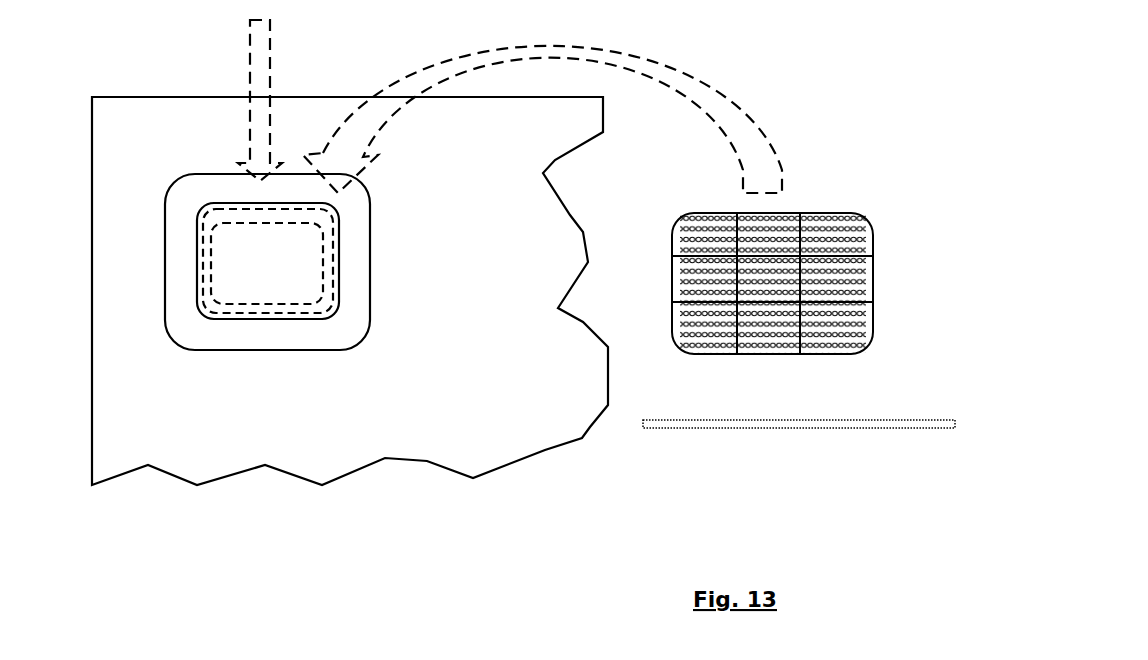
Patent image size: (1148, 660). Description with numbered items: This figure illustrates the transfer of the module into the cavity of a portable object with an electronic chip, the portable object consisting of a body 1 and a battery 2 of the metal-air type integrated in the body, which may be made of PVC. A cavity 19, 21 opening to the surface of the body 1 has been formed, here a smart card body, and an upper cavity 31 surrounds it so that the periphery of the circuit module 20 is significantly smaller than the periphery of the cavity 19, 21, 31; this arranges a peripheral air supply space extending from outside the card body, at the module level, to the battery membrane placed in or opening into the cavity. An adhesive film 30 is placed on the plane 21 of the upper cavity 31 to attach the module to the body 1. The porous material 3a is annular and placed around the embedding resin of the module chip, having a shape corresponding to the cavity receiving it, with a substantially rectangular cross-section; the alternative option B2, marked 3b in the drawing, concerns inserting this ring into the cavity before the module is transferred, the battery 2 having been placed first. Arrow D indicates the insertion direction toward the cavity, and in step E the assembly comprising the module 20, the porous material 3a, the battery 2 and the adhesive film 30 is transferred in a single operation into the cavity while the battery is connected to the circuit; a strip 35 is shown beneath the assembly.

The body 1 is at (538, 428).
The upper cavity 31 is at (162, 216).
The cavity plane 21 is at (188, 190).
The cavity 19 is at (316, 330).
The inner element (option B2) 3b is at (340, 268).
The insertion direction D is at (275, 100).
The transfer step E is at (542, 104).
The circuit module 20 is at (816, 216).
The porous material 3a is at (816, 216).
The battery 2 is at (816, 216).
The adhesive film 30 is at (832, 188).
The strip / tape 35 is at (765, 440).